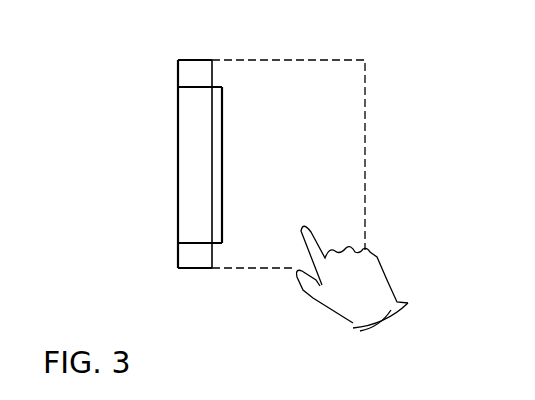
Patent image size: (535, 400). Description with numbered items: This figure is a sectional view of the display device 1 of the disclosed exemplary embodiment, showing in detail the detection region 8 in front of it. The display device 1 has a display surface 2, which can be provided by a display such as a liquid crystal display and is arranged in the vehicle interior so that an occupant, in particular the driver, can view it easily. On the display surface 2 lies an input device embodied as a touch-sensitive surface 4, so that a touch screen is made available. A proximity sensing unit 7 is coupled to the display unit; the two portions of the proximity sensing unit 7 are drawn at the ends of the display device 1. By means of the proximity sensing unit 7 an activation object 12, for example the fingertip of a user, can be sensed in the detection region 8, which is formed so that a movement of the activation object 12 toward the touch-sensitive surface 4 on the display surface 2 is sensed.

The display device 1 is at (187, 157).
The display surface 2 is at (212, 217).
The touch-sensitive surface 4 is at (219, 110).
The proximity sensing unit 7 is at (186, 74).
The detection region 8 is at (311, 174).
The activation object 12 is at (312, 237).